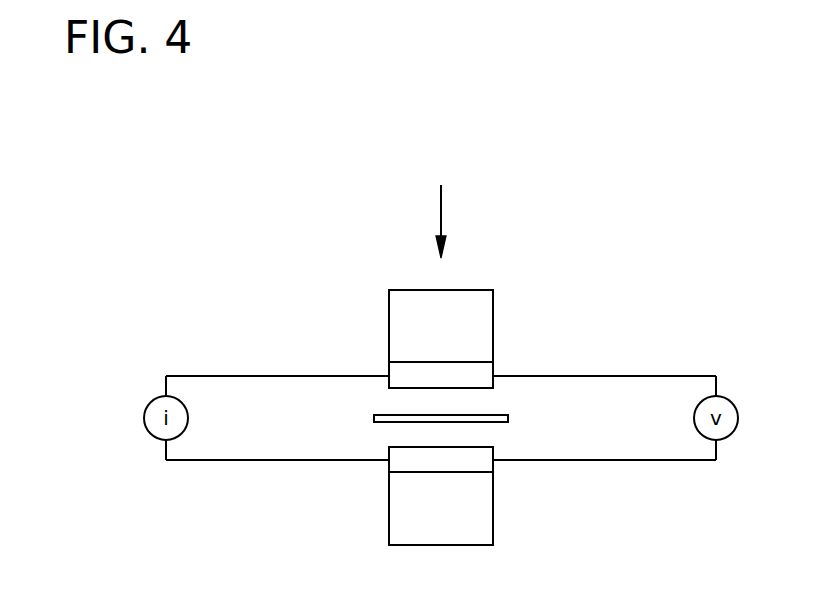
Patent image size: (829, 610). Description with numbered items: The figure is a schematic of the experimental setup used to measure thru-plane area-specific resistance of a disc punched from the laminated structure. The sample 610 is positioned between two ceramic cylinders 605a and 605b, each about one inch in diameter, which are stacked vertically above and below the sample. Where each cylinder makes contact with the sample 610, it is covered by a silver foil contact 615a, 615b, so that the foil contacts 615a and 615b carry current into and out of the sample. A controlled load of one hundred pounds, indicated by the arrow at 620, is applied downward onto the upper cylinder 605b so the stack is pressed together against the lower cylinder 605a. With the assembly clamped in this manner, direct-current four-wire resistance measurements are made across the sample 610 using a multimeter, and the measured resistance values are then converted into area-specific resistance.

The ceramic cylinder 605a is at (472, 511).
The ceramic cylinder 605b is at (465, 326).
The sample 610 is at (526, 401).
The silver foil contact 615a is at (432, 460).
The silver foil contact 615b is at (432, 377).
The controlled load 620 is at (441, 210).